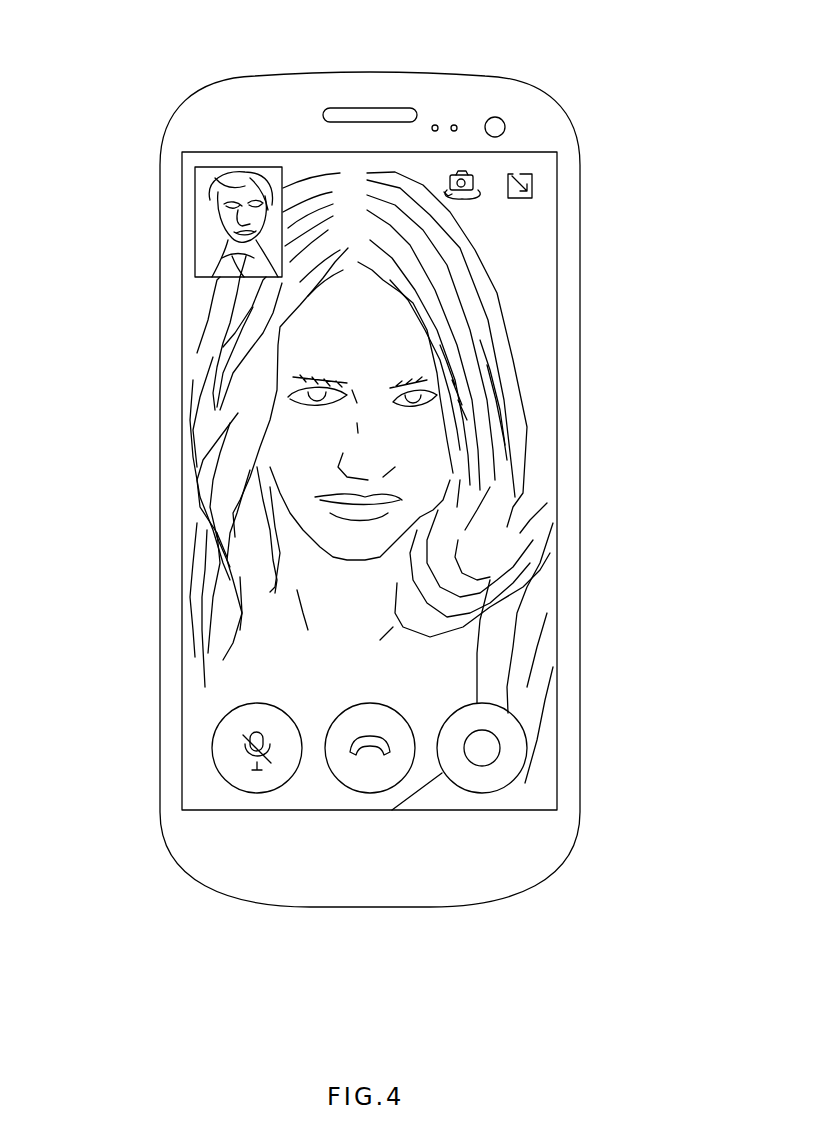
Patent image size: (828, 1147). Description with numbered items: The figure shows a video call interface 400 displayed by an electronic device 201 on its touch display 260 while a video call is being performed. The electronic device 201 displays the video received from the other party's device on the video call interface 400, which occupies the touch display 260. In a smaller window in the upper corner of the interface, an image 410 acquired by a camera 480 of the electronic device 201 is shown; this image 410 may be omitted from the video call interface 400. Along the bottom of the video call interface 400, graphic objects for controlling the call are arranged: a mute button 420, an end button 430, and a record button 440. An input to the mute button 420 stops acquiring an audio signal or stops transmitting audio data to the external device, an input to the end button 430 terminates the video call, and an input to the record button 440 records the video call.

The electronic device 201 is at (256, 76).
The touch display 260 is at (558, 293).
The video call interface 400 is at (388, 148).
The image 410 is at (217, 217).
The mute button 420 is at (225, 748).
The end button 430 is at (370, 778).
The record button 440 is at (495, 778).
The camera 480 is at (505, 128).